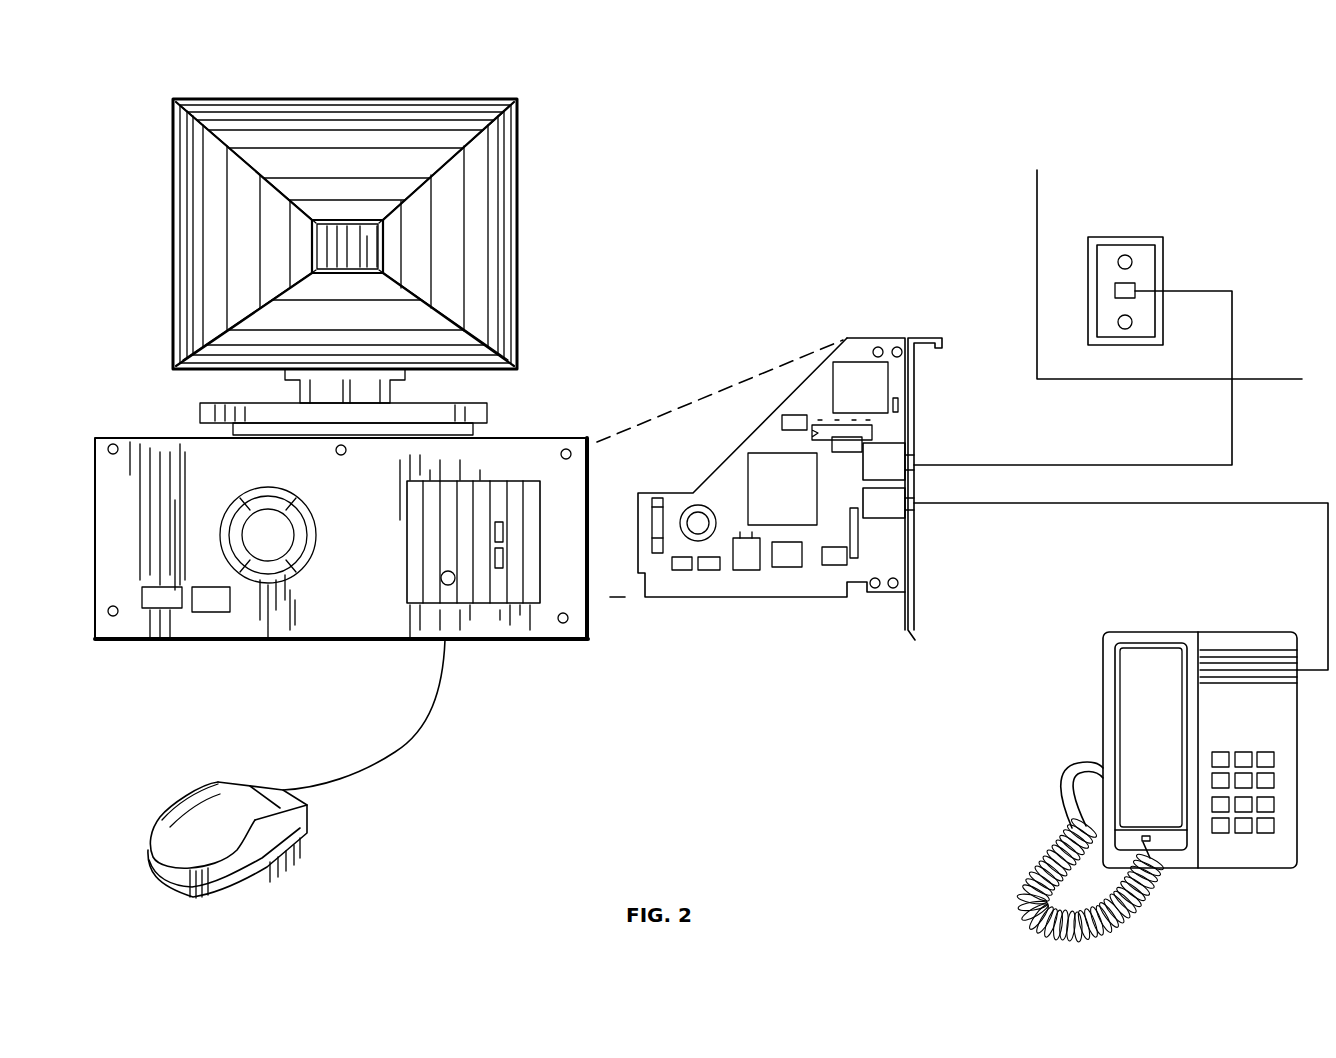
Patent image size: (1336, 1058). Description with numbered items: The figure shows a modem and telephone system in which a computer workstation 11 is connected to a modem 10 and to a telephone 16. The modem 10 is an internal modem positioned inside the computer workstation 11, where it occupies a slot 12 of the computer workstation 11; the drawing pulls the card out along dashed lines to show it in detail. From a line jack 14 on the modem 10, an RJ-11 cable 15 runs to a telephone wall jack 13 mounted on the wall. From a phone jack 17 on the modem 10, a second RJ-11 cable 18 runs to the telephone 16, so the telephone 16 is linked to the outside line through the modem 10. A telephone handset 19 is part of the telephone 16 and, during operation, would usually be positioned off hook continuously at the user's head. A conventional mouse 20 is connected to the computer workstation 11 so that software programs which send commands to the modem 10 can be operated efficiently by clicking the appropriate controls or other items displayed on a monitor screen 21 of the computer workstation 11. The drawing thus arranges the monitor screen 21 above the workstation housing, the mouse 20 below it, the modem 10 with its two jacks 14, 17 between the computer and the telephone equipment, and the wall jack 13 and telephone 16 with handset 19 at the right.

The modem 10 is at (873, 338).
The computer workstation 11 is at (537, 438).
The slot 12 is at (500, 603).
The telephone wall jack 13 is at (1126, 238).
The line jack 14 is at (914, 456).
The RJ-11 cable 15 is at (1232, 398).
The telephone 16 is at (1241, 632).
The phone jack 17 is at (914, 521).
The RJ-11 cable 18 is at (1328, 527).
The telephone handset 19 is at (1115, 686).
The mouse 20 is at (190, 796).
The monitor screen 21 is at (368, 98).